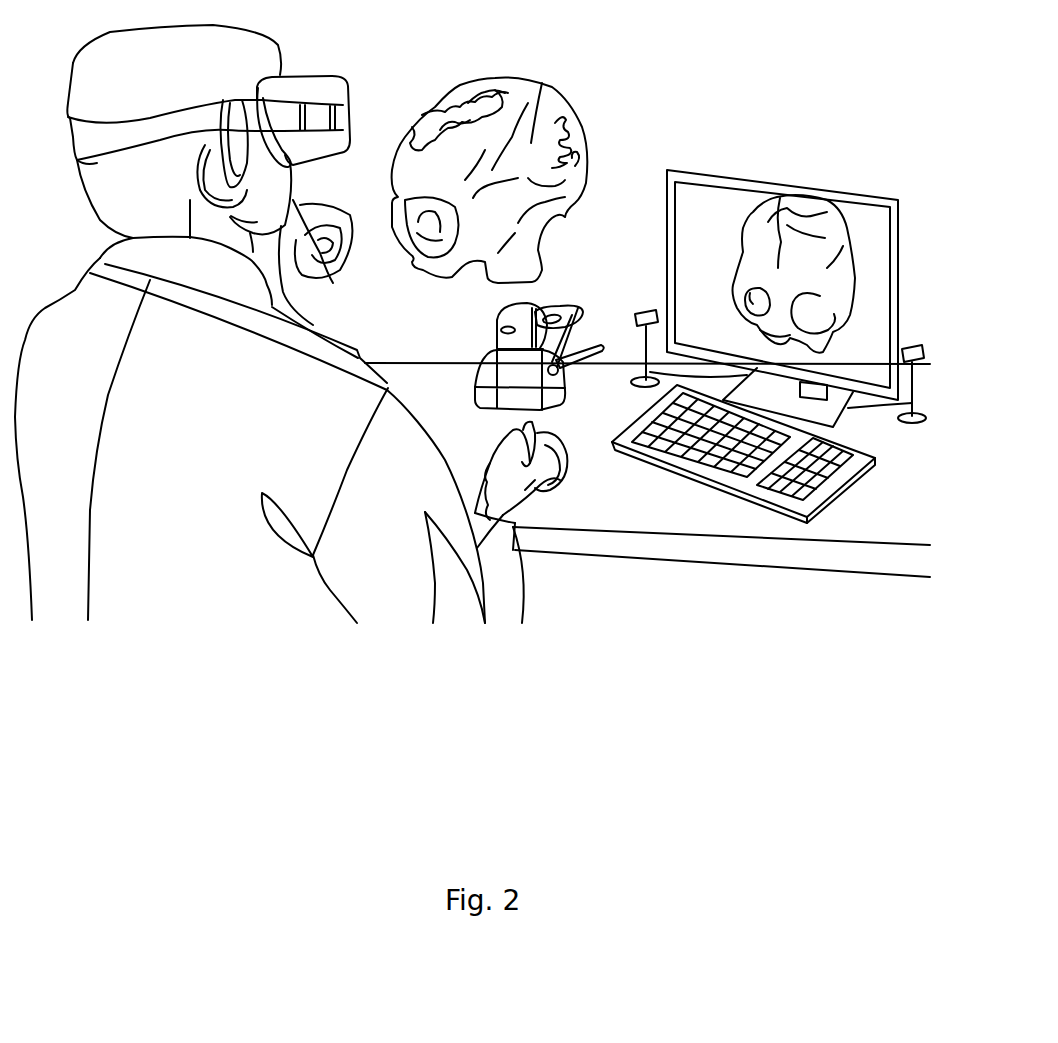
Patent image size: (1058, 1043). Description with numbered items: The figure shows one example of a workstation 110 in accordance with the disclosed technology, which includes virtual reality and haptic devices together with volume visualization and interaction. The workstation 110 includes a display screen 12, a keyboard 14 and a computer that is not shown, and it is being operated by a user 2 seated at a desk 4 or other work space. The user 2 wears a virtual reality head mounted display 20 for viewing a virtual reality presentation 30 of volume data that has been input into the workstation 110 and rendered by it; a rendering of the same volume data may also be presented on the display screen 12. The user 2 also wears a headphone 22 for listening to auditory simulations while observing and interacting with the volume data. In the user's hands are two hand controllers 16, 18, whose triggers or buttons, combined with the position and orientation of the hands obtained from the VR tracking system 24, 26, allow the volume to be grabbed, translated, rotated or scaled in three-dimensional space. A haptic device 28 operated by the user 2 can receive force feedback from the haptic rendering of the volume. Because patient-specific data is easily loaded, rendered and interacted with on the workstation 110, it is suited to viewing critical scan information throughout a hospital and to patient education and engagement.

The user 2 is at (206, 557).
The desk 4 is at (452, 394).
The display screen 12 is at (770, 167).
The keyboard 14 is at (830, 482).
The hand controller 16 is at (567, 467).
The hand controller 18 is at (268, 328).
The virtual reality head mounted display 20 is at (283, 108).
The headphone 22 is at (217, 166).
The VR tracking system 24 is at (648, 307).
The VR tracking system 26 is at (915, 345).
The haptic device 28 is at (496, 320).
The virtual reality presentation 30 is at (452, 146).
The workstation 110 is at (781, 239).